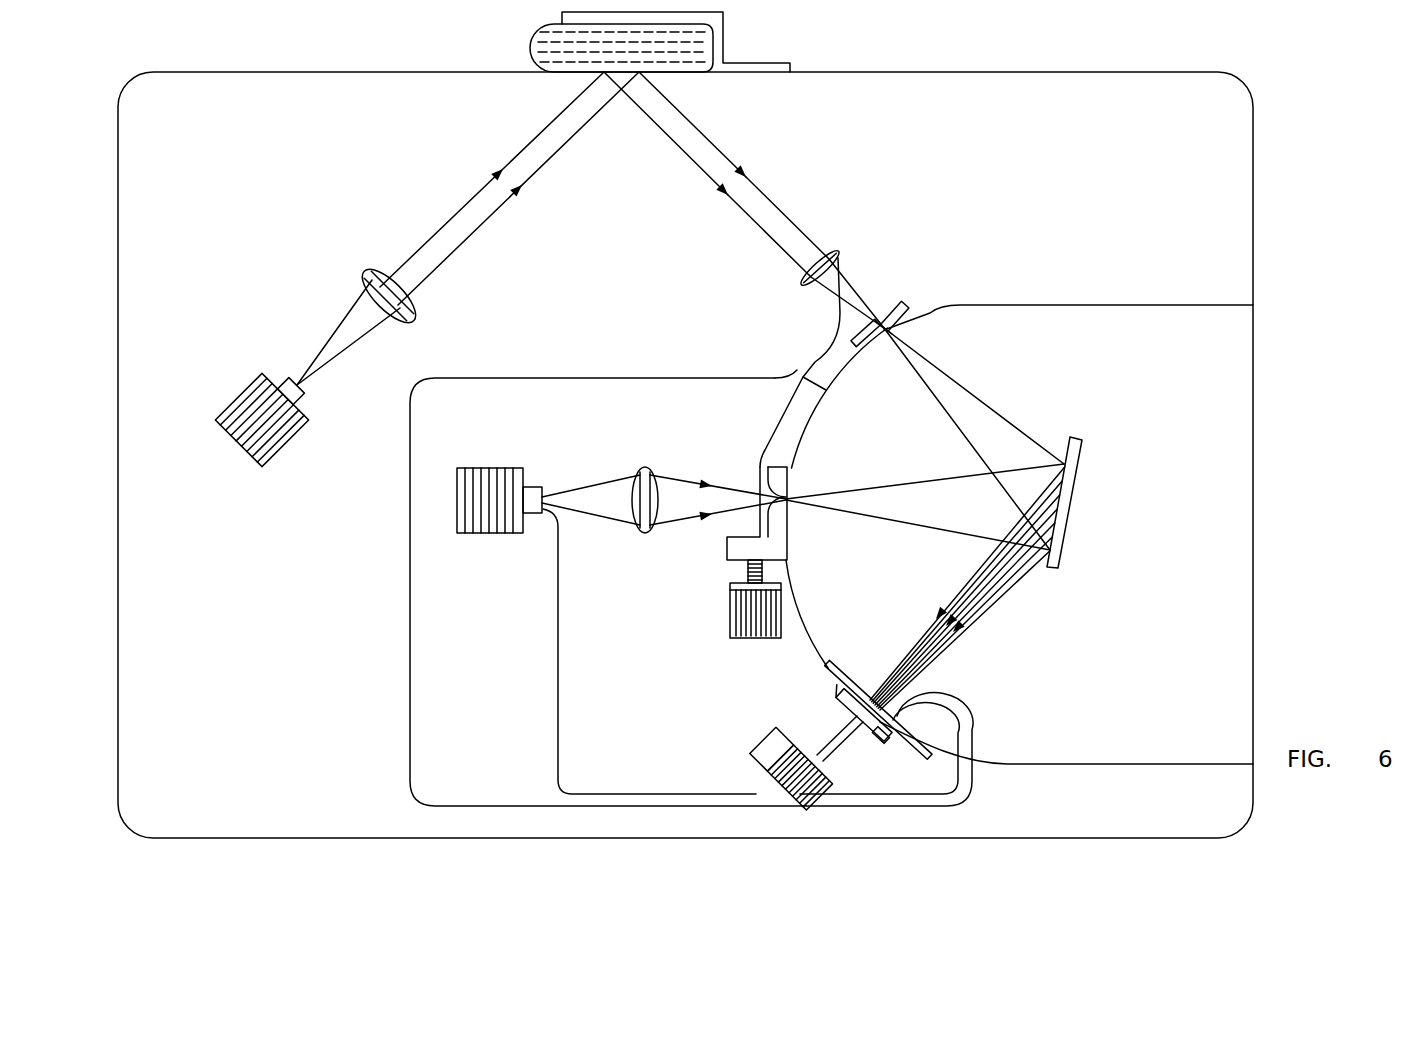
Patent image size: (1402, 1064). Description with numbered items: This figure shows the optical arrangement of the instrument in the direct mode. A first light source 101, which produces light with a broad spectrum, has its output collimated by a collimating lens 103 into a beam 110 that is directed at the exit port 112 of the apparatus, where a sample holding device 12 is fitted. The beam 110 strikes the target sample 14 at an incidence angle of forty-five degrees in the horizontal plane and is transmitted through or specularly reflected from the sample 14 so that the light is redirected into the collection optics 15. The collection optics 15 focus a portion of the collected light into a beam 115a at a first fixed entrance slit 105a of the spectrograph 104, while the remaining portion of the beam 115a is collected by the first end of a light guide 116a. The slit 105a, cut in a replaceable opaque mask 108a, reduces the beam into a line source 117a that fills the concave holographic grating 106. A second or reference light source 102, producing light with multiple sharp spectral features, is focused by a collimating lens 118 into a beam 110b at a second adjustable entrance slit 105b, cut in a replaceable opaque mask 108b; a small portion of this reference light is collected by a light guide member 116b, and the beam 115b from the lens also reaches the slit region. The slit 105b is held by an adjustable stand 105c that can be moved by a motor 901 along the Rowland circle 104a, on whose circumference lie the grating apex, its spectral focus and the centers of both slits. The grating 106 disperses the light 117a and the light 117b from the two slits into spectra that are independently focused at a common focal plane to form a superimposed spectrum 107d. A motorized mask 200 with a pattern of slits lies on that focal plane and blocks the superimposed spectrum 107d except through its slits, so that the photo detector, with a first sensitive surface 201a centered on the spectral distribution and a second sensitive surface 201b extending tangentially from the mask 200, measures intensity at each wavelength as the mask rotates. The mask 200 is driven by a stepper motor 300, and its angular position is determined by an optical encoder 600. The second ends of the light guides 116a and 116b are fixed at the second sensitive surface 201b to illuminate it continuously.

The sample holding device 12 is at (726, 50).
The target sample 14 is at (538, 42).
The collection optics 15 is at (833, 245).
The first light source 101 is at (246, 382).
The second or reference light source 102 is at (497, 480).
The collimating lens 103 is at (380, 268).
The spectrograph 104 is at (1078, 300).
The Rowland circle 104a is at (840, 368).
The first fixed entrance slit 105a is at (908, 293).
The second adjustable entrance slit 105b is at (782, 532).
The adjustable stand 105c is at (733, 576).
The concave holographic grating 106 is at (1080, 477).
The superimposed spectrum 107d is at (918, 666).
The replaceable rectangular opaque mask 108a is at (898, 322).
The replaceable rectangular opaque mask 108b is at (787, 478).
The beam 110 is at (458, 207).
The beam 110b is at (672, 477).
The exit port 112 is at (598, 90).
The beam 115a is at (858, 283).
The diverging beam path 115b is at (688, 518).
The light guide 116a is at (548, 374).
The light guide member 116b is at (556, 633).
The line source 117a is at (996, 407).
The light 117b is at (981, 456).
The collimating lens 118 is at (638, 467).
The motorized mask 200 is at (823, 673).
The first sensitive surface 201a is at (858, 690).
The second sensitive surface 201b is at (885, 742).
The stepper motor 300 is at (798, 773).
The optical encoder 600 is at (765, 820).
The motor 901 is at (728, 628).